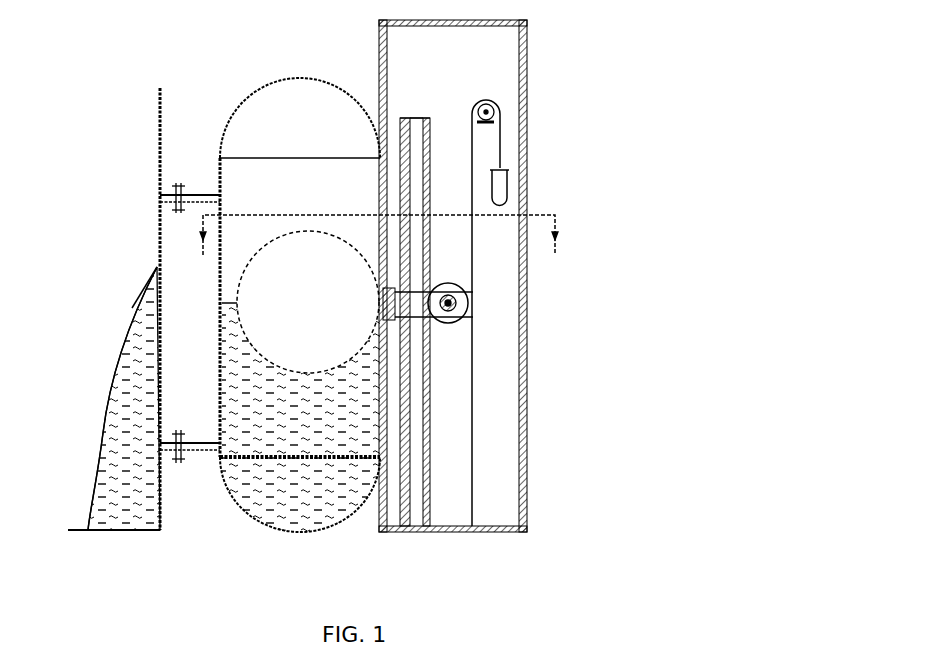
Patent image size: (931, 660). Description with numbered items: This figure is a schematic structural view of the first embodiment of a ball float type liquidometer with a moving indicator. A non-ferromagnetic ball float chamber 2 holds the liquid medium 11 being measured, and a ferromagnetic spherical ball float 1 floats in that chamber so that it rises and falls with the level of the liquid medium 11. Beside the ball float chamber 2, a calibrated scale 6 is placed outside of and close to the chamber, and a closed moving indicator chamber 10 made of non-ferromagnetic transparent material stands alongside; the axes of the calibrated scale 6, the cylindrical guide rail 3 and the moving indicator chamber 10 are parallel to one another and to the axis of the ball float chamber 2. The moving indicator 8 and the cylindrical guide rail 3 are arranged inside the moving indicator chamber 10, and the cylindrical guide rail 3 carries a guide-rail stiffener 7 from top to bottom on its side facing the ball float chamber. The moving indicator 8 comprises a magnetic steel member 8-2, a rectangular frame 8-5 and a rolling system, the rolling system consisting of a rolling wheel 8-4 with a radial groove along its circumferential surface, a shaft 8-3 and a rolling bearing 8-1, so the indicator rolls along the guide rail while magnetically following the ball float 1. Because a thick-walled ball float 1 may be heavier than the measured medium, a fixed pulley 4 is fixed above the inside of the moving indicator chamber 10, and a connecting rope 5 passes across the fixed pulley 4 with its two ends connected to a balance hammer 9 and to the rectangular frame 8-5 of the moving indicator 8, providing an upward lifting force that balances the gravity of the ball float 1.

The ball float 1 is at (318, 333).
The ball float chamber 2 is at (218, 273).
The cylindrical guide rail 3 is at (405, 116).
The fixed pulley 4 is at (494, 106).
The connecting rope 5 is at (500, 138).
The calibrated scale 6 is at (385, 187).
The guide-rail stiffener 7 is at (408, 228).
The moving indicator 8 is at (499, 365).
The rolling bearing 8-1 is at (455, 305).
The magnetic steel member 8-2 is at (410, 318).
The shaft 8-3 is at (455, 303).
The rolling wheel 8-4 is at (455, 304).
The rectangular frame 8-5 is at (455, 301).
The balance hammer 9 is at (505, 199).
The moving indicator chamber 10 is at (527, 478).
The liquid medium in the ball float chamber 11 is at (300, 530).